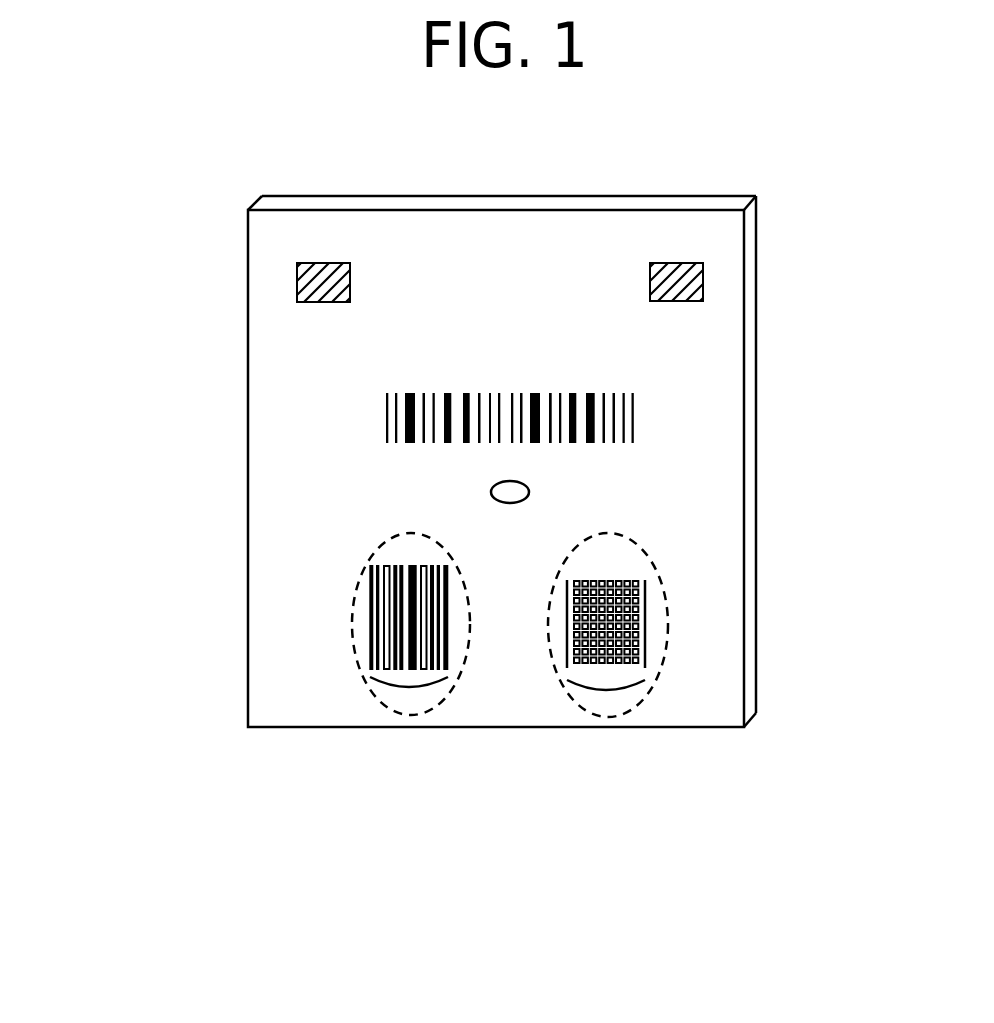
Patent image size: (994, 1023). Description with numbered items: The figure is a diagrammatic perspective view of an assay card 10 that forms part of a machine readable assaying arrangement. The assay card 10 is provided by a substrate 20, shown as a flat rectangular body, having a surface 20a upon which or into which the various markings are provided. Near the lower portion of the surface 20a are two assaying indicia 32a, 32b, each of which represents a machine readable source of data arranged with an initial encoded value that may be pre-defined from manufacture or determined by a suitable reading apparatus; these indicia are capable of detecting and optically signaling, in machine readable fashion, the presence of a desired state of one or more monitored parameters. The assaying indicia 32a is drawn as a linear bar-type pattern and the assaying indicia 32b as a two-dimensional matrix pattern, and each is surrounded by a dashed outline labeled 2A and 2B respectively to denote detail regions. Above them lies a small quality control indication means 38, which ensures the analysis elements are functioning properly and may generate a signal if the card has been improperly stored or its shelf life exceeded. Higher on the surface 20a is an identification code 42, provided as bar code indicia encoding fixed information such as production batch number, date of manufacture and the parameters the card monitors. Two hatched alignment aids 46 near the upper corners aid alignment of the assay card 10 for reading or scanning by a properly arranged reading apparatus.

The assay card 10 is at (258, 800).
The substrate 20 is at (757, 590).
The surface of the substrate 20a is at (718, 467).
The alignment aids 46 is at (297, 287).
The identification code 42 is at (386, 424).
The quality control indication means 38 is at (491, 493).
The detail area of linear bar code 2A is at (462, 692).
The assaying indicia 32a is at (410, 687).
The detail area of two-dimensional code 2B is at (660, 695).
The assaying indicia 32b is at (606, 690).